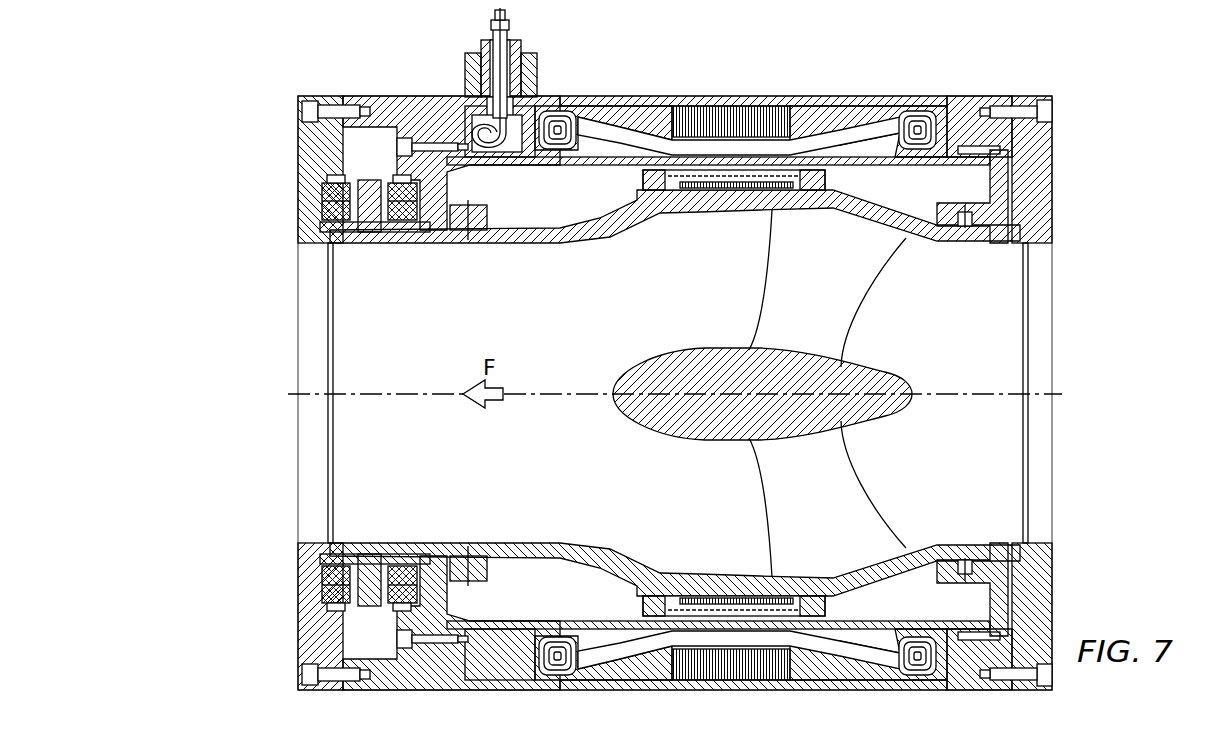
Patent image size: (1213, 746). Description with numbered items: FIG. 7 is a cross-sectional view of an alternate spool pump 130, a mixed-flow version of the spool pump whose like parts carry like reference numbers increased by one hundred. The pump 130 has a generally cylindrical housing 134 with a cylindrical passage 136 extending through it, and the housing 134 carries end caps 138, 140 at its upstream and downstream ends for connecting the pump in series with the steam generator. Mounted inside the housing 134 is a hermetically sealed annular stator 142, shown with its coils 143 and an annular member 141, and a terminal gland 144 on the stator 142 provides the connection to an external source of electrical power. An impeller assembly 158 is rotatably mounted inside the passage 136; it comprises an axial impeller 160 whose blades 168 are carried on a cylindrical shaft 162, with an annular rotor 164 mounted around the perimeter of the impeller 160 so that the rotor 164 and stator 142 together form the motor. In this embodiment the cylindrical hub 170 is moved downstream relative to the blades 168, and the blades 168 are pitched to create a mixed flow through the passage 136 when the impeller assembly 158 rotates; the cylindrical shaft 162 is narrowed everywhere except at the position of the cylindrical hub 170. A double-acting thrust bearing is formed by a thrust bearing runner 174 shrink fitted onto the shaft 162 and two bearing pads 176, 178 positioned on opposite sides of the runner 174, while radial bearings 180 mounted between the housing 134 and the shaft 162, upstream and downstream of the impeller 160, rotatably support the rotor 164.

The pump 130 is at (248, 357).
The housing 134 is at (866, 96).
The passage 136 is at (1047, 293).
The end cap 138 is at (1053, 158).
The end cap 140 is at (297, 170).
The annular member 141 is at (748, 140).
The stator 142 is at (703, 110).
The coils 143 is at (605, 112).
The terminal gland 144 is at (550, 44).
The impeller assembly 158 is at (678, 304).
The impeller 160 is at (857, 290).
The cylindrical shaft 162 is at (972, 243).
The rotor 164 is at (826, 176).
The blades 168 is at (853, 497).
The cylindrical hub 170 is at (880, 370).
The thrust bearing runner 174 is at (366, 236).
The bearing pad 176 is at (343, 247).
The bearing pad 178 is at (392, 237).
The radial bearings 180 is at (508, 218).